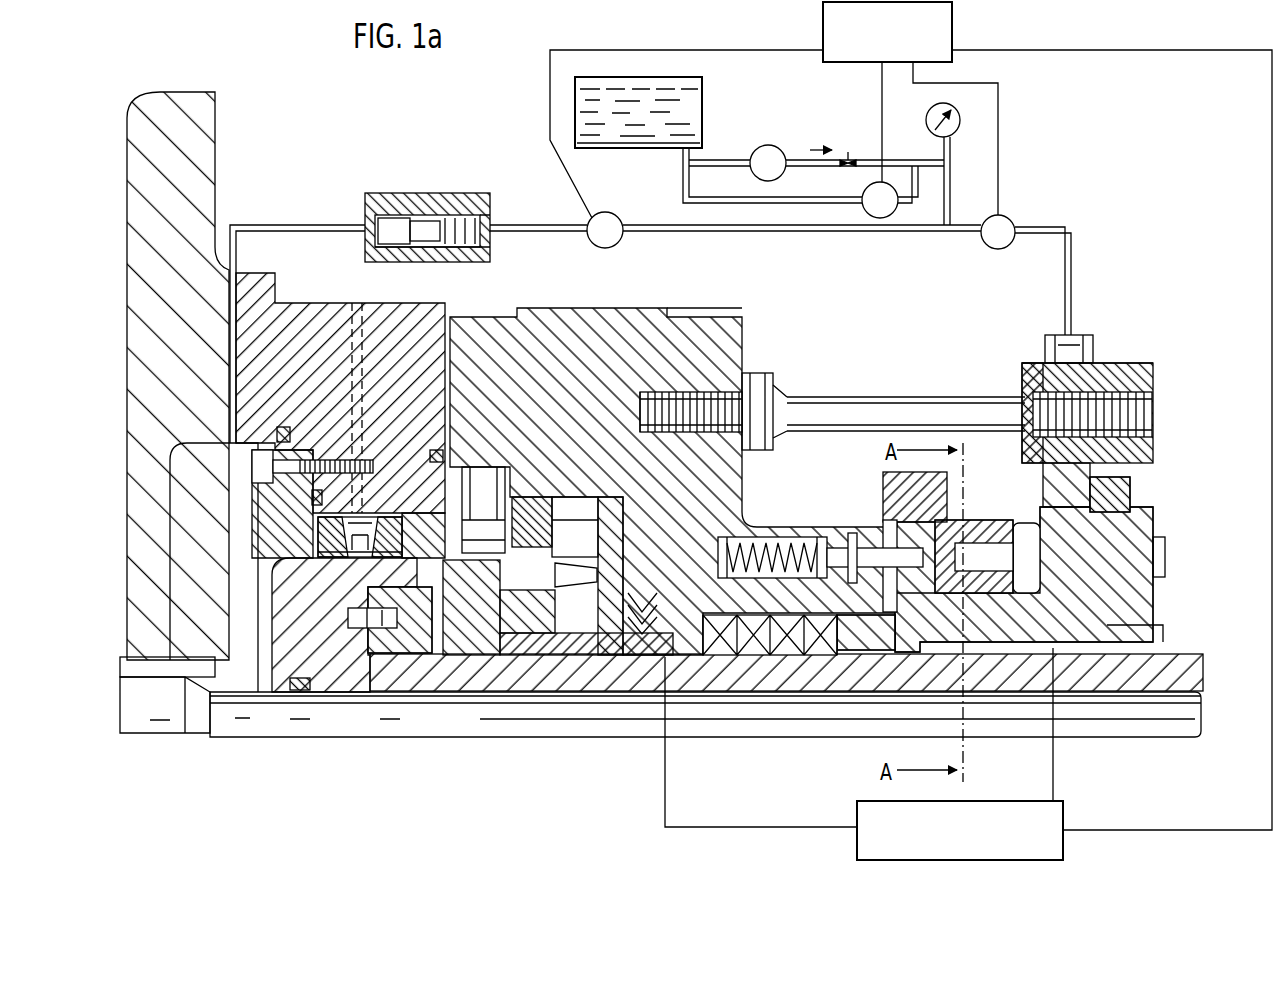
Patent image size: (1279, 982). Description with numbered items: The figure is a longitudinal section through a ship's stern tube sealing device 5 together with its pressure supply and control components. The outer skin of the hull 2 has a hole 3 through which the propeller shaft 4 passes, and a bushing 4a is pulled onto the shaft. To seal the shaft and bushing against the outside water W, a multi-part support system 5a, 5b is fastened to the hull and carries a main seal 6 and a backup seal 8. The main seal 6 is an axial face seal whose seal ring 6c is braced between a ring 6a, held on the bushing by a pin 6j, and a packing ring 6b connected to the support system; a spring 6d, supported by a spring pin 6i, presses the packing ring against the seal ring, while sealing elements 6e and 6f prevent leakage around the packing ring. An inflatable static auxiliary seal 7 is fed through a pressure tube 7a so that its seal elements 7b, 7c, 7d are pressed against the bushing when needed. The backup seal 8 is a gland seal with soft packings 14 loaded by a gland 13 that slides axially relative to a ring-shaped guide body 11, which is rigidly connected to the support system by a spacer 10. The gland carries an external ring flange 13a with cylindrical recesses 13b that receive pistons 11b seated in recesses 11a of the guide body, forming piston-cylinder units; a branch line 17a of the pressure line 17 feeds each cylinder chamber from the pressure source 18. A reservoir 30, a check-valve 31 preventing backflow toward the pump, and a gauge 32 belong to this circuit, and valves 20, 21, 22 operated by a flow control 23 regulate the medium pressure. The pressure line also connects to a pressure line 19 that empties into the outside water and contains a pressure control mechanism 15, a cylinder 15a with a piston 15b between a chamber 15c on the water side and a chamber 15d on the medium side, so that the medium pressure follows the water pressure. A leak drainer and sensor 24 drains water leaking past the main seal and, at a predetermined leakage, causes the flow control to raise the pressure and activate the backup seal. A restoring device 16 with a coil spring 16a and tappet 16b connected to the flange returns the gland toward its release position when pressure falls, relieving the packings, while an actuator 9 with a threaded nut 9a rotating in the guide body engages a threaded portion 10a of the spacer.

The hull 2 is at (207, 125).
The hole 3 is at (162, 667).
The propeller shaft 4 is at (1135, 730).
The bushing 4a is at (657, 683).
The outside water W is at (235, 665).
The sealing device 5 is at (618, 300).
The support system part 5a is at (332, 317).
The support system part 5b is at (712, 323).
The main seal 6 is at (515, 527).
The ring 6a is at (398, 640).
The packing ring 6b is at (553, 640).
The seal ring 6c is at (490, 648).
The spring 6d is at (523, 590).
The sealing element 6e is at (633, 627).
The sealing element 6f is at (527, 503).
The spring pin 6i is at (607, 557).
The pin 6j is at (360, 616).
The auxiliary seal 7 is at (320, 527).
The pressure tube 7a is at (357, 305).
The seal element 7b is at (313, 503).
The seal element 7c is at (320, 530).
The seal element 7d is at (280, 600).
The backup seal 8 is at (968, 355).
The actuator 9 is at (1160, 412).
The threaded nut 9a is at (1147, 367).
The spacer 10 is at (820, 404).
The threaded portion 10a is at (1152, 431).
The guide body 11 is at (1095, 352).
The cylindrical recess 11a is at (1023, 577).
The piston 11b is at (987, 520).
The gland 13 is at (853, 645).
The external ring flange 13a is at (917, 487).
The cylindrical recess 13b is at (975, 560).
The soft packings 14 is at (723, 647).
The pressure control mechanism 15 is at (426, 214).
The cylinder 15a is at (390, 247).
The piston 15b is at (442, 217).
The chamber 15c is at (387, 226).
The chamber 15d is at (483, 193).
The restoring device 16 is at (820, 533).
The coil spring 16a is at (767, 540).
The tappet 16b is at (842, 550).
The pressure line 17 is at (1073, 272).
The branch line 17a is at (1133, 490).
The pressure source 18 is at (768, 145).
The pressure line 19 is at (273, 223).
The valve 20 is at (614, 214).
The valve 21 is at (880, 200).
The valve 22 is at (1015, 228).
The flow control 23 is at (815, 16).
The leak drainer and sensor 24 is at (850, 850).
The reservoir 30 is at (683, 115).
The check-valve 31 is at (848, 158).
The gauge 32 is at (960, 125).